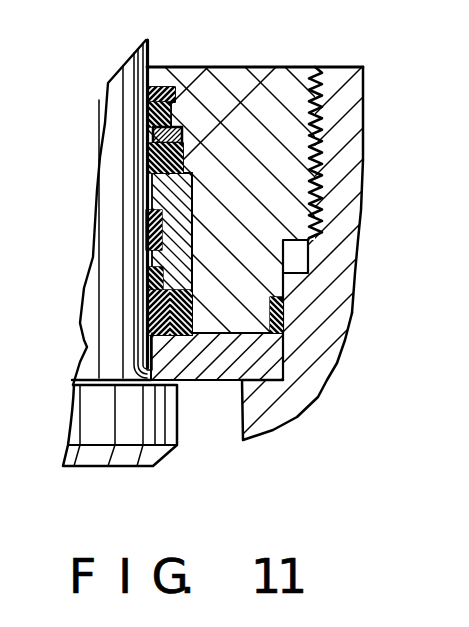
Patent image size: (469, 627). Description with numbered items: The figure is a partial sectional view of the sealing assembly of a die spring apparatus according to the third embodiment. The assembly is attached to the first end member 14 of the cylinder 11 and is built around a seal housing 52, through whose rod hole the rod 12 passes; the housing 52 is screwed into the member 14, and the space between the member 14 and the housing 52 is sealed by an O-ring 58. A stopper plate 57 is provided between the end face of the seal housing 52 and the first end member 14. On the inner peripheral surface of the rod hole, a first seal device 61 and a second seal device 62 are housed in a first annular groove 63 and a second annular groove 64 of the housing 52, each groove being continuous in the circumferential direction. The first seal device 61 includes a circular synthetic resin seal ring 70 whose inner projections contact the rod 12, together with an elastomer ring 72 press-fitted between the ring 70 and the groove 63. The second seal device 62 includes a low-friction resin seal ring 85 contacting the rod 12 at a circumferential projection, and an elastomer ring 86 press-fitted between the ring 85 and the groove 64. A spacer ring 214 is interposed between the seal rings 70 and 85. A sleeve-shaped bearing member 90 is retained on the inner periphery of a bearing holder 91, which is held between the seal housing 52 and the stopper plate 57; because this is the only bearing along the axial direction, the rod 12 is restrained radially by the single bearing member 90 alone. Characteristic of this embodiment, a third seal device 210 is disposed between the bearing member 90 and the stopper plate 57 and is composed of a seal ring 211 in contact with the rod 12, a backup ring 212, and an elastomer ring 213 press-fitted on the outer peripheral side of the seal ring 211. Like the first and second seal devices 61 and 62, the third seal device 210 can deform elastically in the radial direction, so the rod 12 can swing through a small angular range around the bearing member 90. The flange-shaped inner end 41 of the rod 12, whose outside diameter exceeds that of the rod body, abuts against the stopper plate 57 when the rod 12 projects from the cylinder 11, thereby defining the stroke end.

The cylinder 11 is at (234, 313).
The rod 12 is at (109, 82).
The first end member 14 is at (323, 367).
The inner end 41 is at (90, 456).
The seal housing 52 is at (278, 74).
The stopper plate 57 is at (205, 393).
The O-ring 58 is at (282, 321).
The first seal device 61 is at (139, 79).
The second seal device 62 is at (146, 183).
The first annular groove 63 is at (183, 113).
The second annular groove 64 is at (236, 83).
The seal ring 70 is at (148, 118).
The elastomer ring 72 is at (173, 100).
The seal ring 85 is at (144, 171).
The elastomer ring 86 is at (186, 160).
The bearing member 90 is at (147, 219).
The bearing holder 91 is at (190, 211).
The third seal device 210 is at (140, 337).
The seal ring 211 is at (146, 309).
The backup ring 212 is at (146, 279).
The elastomer ring 213 is at (194, 306).
The spacer ring 214 is at (148, 136).